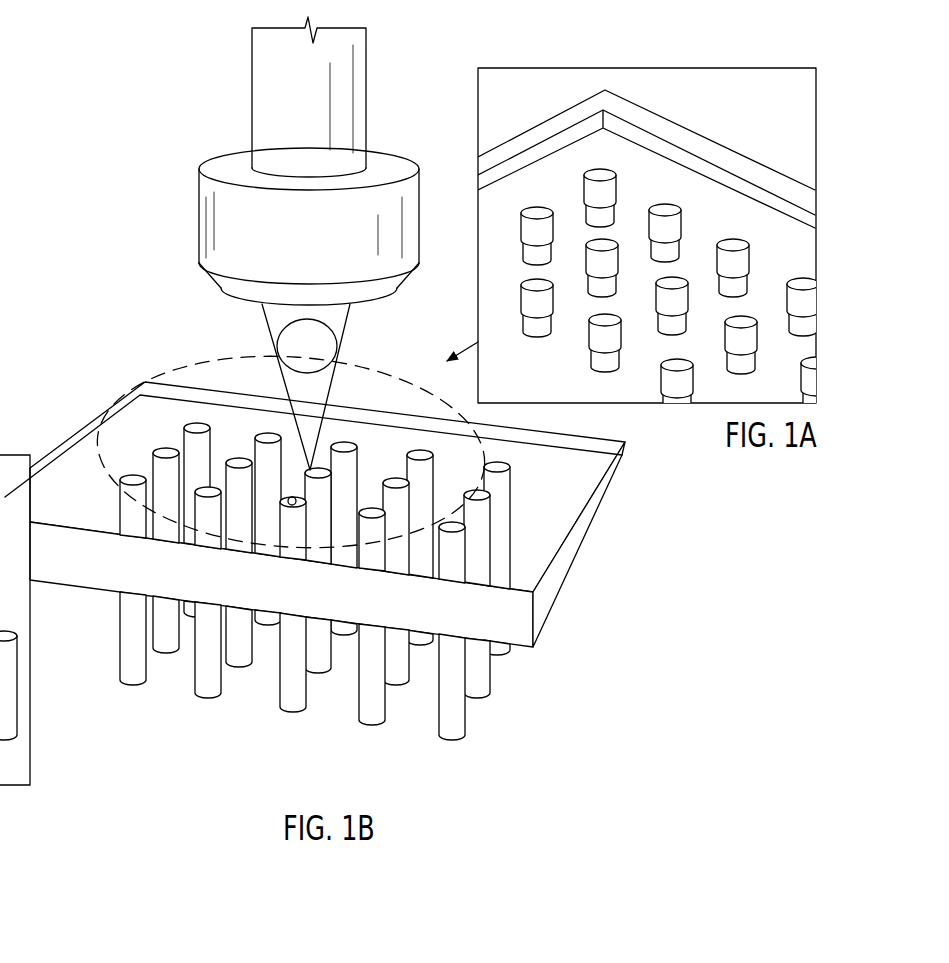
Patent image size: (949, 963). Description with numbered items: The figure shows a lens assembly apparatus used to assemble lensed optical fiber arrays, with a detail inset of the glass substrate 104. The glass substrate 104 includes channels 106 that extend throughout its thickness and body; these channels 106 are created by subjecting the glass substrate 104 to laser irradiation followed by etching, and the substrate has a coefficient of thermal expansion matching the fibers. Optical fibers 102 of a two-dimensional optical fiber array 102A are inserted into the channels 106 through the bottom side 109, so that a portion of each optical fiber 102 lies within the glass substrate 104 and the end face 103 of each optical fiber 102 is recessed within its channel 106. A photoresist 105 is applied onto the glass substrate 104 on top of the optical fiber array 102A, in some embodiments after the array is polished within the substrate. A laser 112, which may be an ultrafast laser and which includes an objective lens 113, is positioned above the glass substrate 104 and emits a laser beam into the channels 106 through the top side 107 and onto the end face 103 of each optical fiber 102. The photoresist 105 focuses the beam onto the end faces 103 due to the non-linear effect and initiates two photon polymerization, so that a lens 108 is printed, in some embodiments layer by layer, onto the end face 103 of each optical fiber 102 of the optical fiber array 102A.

In FIG. 1B, the optical fiber 102 is at (0, 745).
In FIG. 1B, the optical fiber array 102A is at (592, 673).
In FIG. 1B, the end face 103 is at (0, 551).
In FIG. 1B, the glass substrate 104 is at (338, 557).
In FIG. 1A, the glass substrate 104 is at (743, 208).
In FIG. 1B, the photoresist 105 is at (255, 408).
In FIG. 1B, the channels 106 is at (264, 434).
In FIG. 1B, the top side 107 is at (544, 576).
In FIG. 1B, the lens 108 is at (305, 469).
In FIG. 1B, the bottom side 109 is at (521, 658).
In FIG. 1B, the laser 112 is at (360, 108).
In FIG. 1B, the objective lens 113 is at (213, 226).